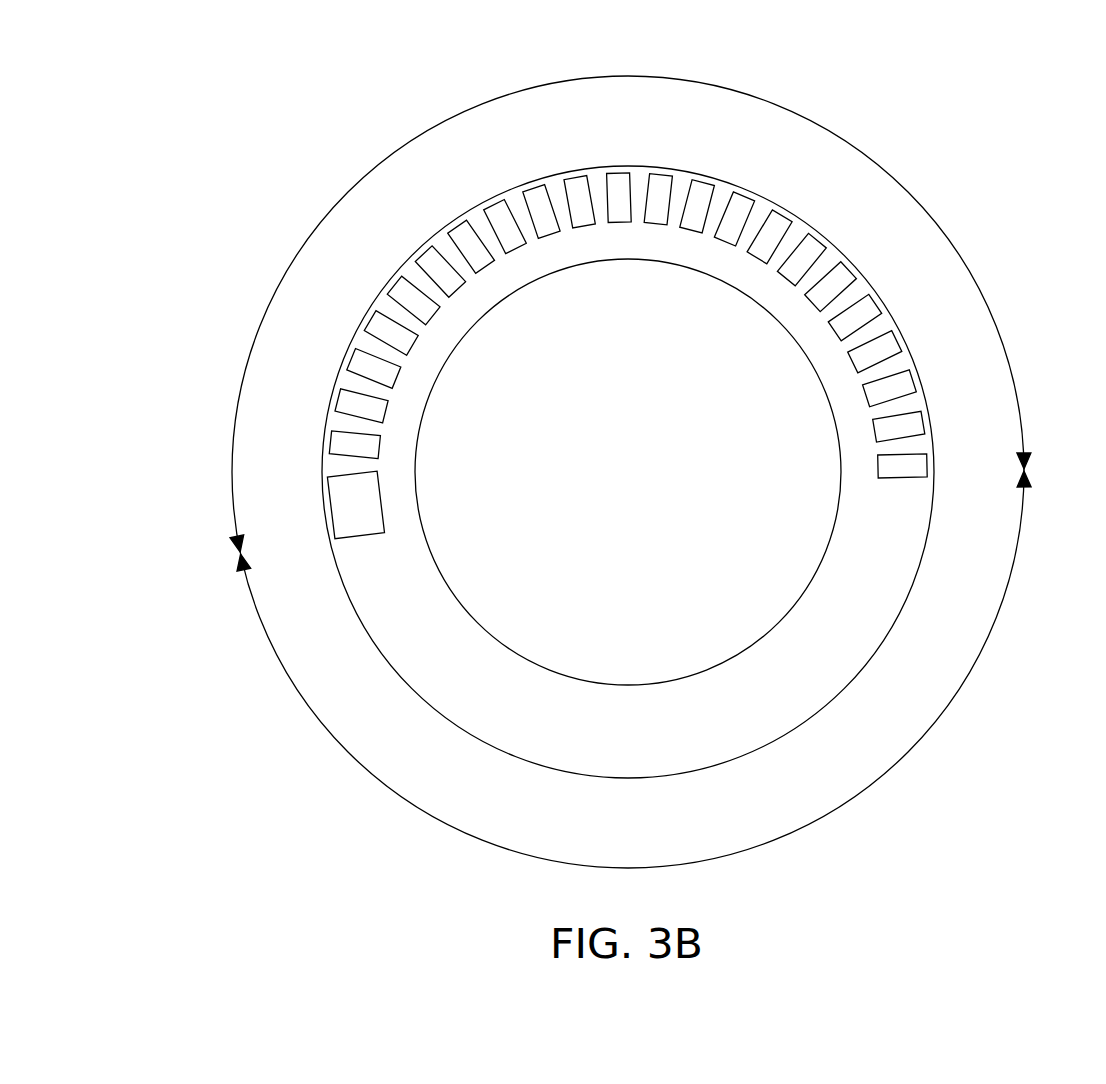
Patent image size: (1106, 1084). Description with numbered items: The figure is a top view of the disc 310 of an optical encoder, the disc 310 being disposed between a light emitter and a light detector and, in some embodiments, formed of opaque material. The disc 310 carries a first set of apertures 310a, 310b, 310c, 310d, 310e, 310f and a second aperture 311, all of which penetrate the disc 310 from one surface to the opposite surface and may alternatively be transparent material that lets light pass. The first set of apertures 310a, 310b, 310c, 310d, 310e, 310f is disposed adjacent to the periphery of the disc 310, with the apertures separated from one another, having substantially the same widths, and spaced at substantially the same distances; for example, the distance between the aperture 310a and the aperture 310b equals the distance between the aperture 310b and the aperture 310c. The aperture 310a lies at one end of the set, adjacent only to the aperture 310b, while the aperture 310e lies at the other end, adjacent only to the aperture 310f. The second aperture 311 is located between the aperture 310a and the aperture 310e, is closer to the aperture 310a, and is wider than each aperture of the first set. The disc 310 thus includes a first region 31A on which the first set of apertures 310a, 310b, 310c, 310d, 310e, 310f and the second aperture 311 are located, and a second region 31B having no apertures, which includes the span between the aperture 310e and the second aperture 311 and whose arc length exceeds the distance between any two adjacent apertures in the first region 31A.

The disc 310 is at (1073, 69).
The aperture 310a is at (345, 443).
The aperture 310b is at (350, 400).
The aperture 310c is at (360, 362).
The aperture 310d is at (385, 327).
The aperture 310e is at (915, 464).
The aperture 310f is at (912, 427).
The second aperture 311 is at (352, 503).
The first region 31A is at (630, 298).
The second region 31B is at (634, 686).